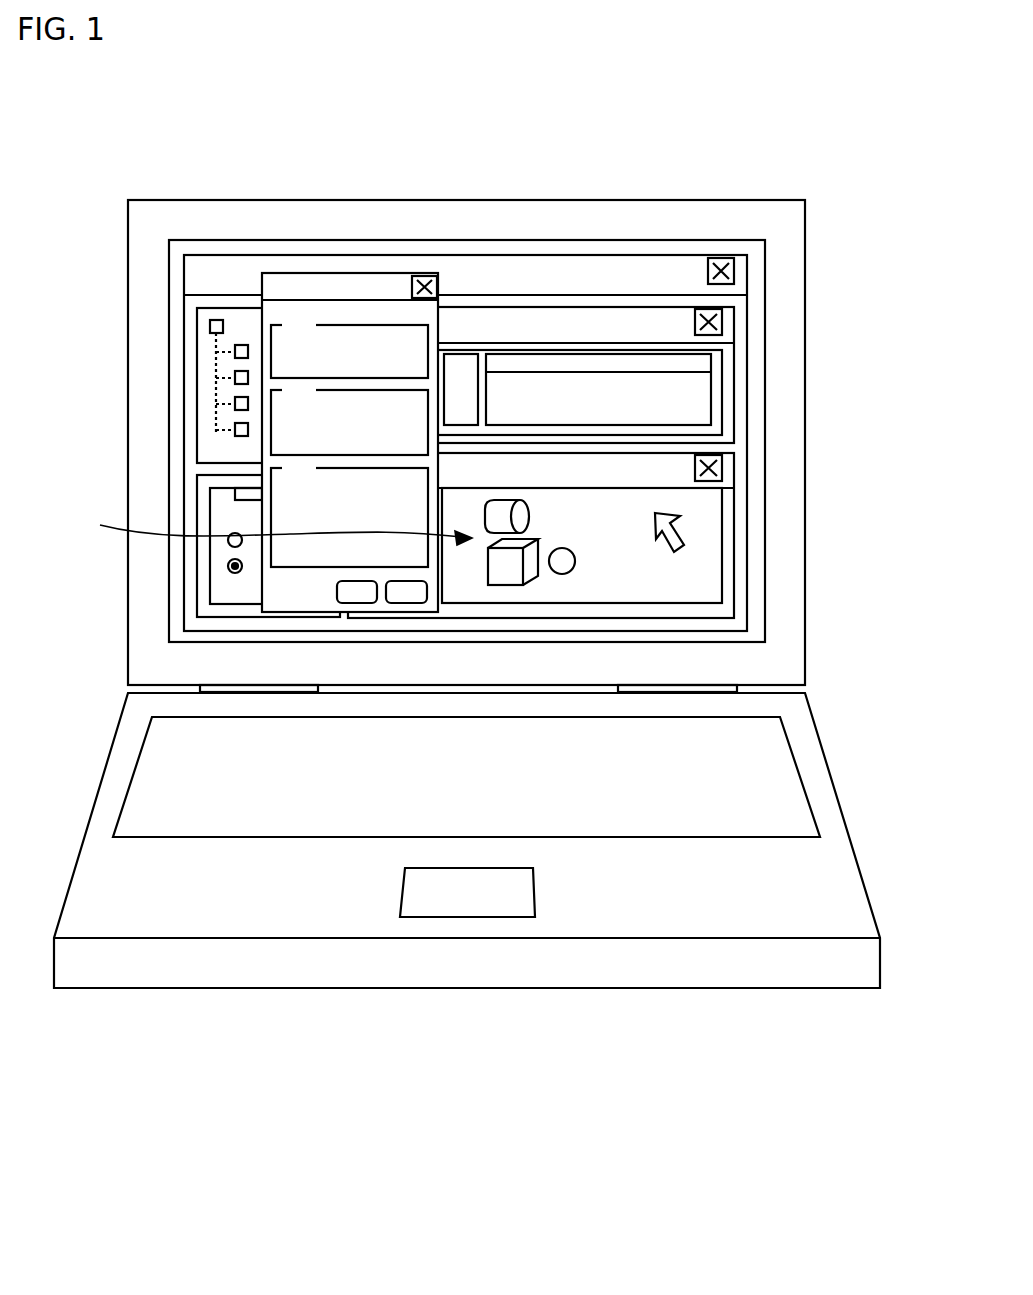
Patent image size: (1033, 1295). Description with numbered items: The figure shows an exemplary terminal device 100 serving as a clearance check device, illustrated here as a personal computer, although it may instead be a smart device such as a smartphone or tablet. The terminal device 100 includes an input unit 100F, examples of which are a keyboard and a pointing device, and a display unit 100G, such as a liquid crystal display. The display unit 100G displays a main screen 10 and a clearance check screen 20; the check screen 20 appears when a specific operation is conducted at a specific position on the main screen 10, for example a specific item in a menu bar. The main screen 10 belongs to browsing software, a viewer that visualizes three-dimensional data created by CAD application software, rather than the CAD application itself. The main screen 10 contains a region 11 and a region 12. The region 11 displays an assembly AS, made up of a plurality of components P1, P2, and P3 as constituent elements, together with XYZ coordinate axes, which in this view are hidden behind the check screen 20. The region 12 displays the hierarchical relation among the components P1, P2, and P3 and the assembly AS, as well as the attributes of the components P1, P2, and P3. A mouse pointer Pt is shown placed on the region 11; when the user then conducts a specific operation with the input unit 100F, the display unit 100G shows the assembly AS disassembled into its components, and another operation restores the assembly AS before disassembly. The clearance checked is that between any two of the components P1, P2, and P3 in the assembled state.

The terminal device 100 is at (694, 1080).
The input unit 100F is at (733, 768).
The main screen 10 is at (195, 268).
The display unit 100G is at (562, 247).
The clearance check screen 20 is at (357, 285).
The region 12 is at (728, 336).
The region 11 is at (728, 465).
The component P2 is at (500, 510).
The component P1 is at (530, 577).
The component P3 is at (562, 561).
The mouse pointer Pt is at (680, 518).
The assembly AS is at (272, 526).